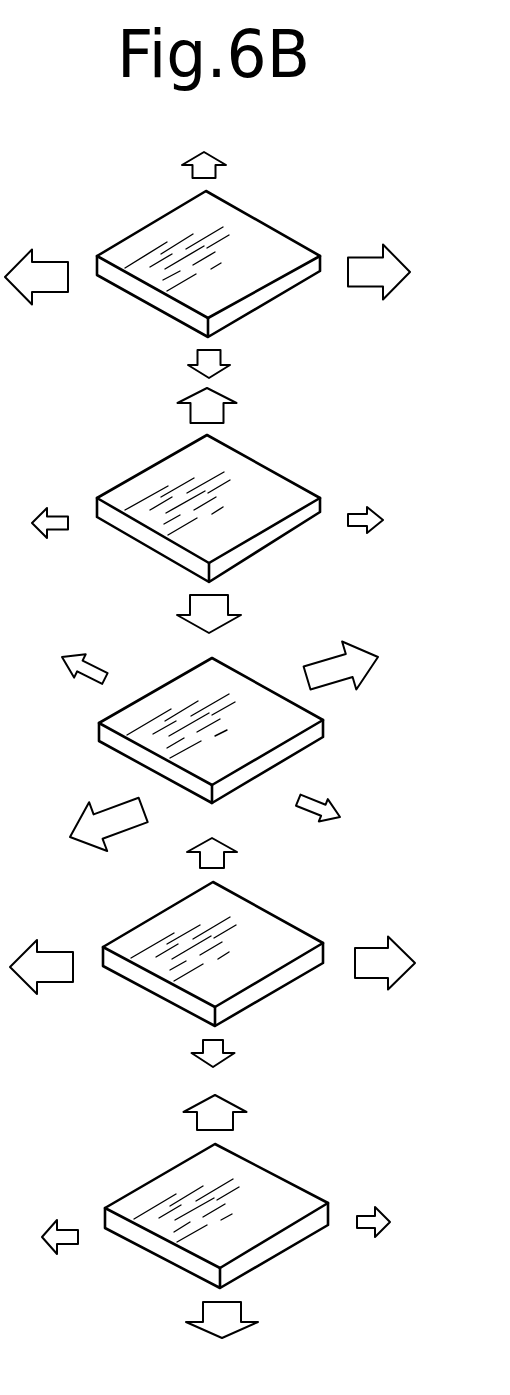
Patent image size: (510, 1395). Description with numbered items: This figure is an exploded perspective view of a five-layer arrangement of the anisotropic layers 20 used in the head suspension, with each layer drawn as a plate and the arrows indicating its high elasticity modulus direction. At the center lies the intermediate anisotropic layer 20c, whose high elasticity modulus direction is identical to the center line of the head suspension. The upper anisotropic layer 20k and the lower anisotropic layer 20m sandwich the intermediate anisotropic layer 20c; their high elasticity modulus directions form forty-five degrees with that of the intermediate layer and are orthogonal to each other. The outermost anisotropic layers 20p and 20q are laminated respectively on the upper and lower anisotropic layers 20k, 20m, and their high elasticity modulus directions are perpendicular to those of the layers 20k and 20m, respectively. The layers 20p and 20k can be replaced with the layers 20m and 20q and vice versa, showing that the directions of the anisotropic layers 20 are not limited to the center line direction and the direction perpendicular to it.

The anisotropic layers 20 is at (128, 720).
The outermost anisotropic layer 20p is at (320, 263).
The upper anisotropic layer 20k is at (320, 512).
The intermediate anisotropic layer 20c is at (317, 735).
The lower anisotropic layer 20m is at (308, 965).
The outermost anisotropic layer 20q is at (310, 1227).